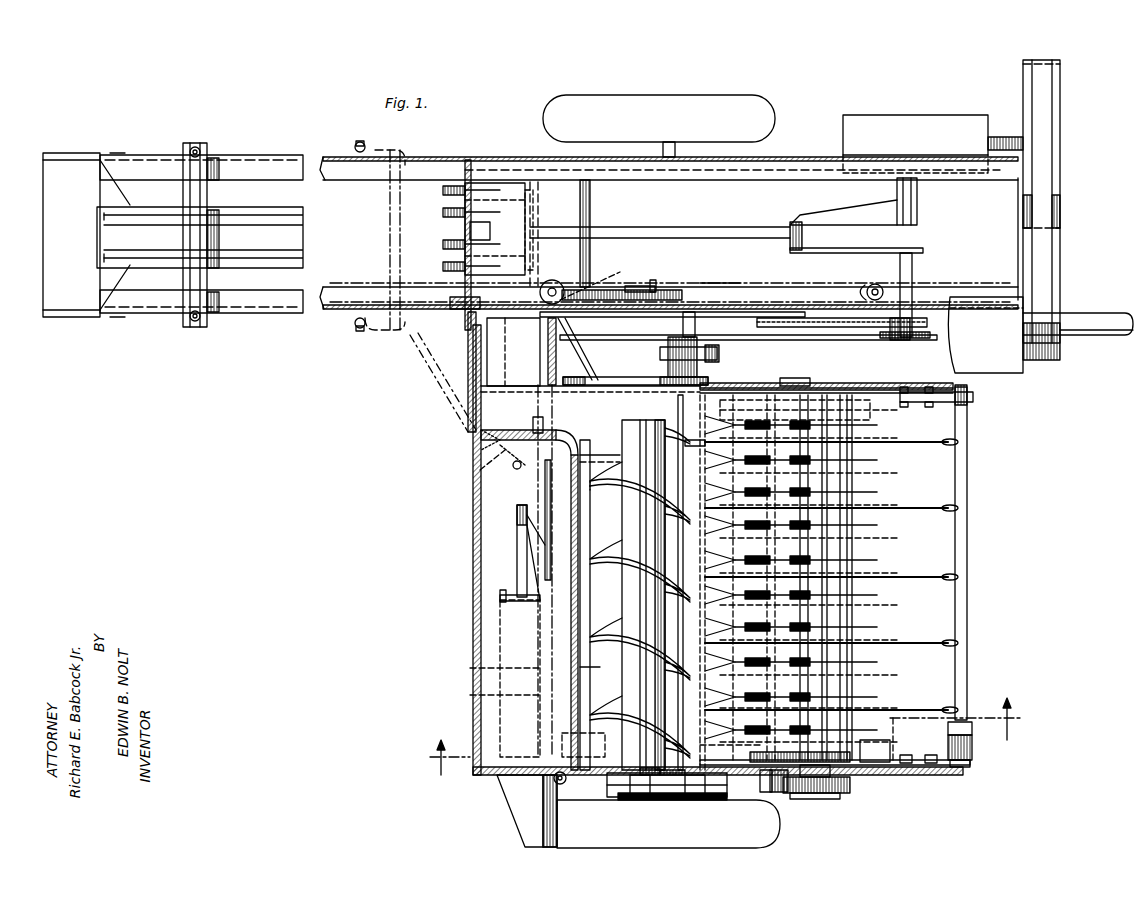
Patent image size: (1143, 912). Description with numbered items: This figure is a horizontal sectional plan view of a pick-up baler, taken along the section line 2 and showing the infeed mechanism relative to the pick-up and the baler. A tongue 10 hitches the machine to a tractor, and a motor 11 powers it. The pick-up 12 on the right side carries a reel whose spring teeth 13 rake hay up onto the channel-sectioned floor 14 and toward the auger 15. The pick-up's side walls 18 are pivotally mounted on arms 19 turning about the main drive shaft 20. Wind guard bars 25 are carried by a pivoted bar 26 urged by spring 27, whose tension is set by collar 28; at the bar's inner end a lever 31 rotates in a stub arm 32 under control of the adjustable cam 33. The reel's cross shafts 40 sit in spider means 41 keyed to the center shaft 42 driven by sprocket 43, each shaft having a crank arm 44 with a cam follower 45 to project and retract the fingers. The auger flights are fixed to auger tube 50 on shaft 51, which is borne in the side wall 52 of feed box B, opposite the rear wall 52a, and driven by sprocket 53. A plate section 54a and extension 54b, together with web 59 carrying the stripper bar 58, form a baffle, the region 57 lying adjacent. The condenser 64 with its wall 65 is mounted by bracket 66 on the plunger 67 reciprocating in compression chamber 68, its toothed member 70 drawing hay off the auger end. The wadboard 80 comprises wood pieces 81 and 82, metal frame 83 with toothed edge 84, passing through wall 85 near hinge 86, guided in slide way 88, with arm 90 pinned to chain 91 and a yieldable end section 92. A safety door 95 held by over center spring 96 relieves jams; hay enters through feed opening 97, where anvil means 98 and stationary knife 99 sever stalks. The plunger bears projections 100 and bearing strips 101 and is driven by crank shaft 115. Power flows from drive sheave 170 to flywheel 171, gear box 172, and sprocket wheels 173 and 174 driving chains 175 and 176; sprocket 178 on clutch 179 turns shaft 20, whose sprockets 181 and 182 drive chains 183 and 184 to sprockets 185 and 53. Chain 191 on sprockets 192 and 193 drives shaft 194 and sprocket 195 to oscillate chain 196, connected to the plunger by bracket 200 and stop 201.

The tongue 10 is at (1098, 315).
The motor 11 is at (990, 312).
The pick-up 12 is at (850, 543).
The spring teeth 13 is at (880, 492).
The floor 14 is at (830, 610).
The auger 15 is at (640, 418).
The side walls 18 is at (880, 392).
The arms 19 is at (770, 390).
The shaft 20 is at (676, 410).
The wind guard bars 25 is at (925, 444).
The bar 26 is at (967, 657).
The spring 27 is at (972, 748).
The collar 28 is at (948, 728).
The lever 31 is at (968, 400).
The stub arm 32 is at (973, 396).
The adjustable cam 33 is at (950, 393).
The cross shafts 40 is at (715, 440).
The spider means 41 is at (800, 405).
The center shaft 42 is at (790, 380).
The sprocket 43 is at (768, 795).
The crank arm 44 is at (895, 765).
The cam follower 45 is at (750, 758).
The auger tube 50 is at (628, 538).
The shaft 51 is at (586, 779).
The side wall 52 is at (600, 778).
The rear wall 52a is at (473, 722).
The sprocket 53 is at (635, 800).
The plate section 54a is at (600, 449).
The extension 54b is at (600, 670).
The curved wall 57 is at (568, 435).
The stripper bar 58 is at (586, 607).
The web 59 is at (585, 585).
The condenser 64 is at (548, 367).
The wall 65 is at (625, 380).
The bracket 66 is at (580, 350).
The plunger 67 is at (468, 233).
The compression chamber 68 is at (365, 200).
The toothed member 70 is at (535, 387).
The wadboard 80 is at (514, 558).
The wood piece 81 is at (572, 650).
The wood piece 82 is at (517, 508).
The metal frame piece 83 is at (510, 633).
The toothed edge 84 is at (500, 597).
The wall 85 is at (510, 430).
The hinge 86 is at (470, 440).
The slide way 88 is at (540, 465).
The arm 90 is at (490, 695).
The sprocket chain 91 is at (490, 662).
The yieldable free end section 92 is at (545, 493).
The safety door 95 is at (455, 362).
The over center spring 96 is at (480, 452).
The feed opening 97 is at (520, 330).
The anvil means 98 is at (455, 298).
The stationary knife 99 is at (480, 325).
The projections 100 is at (443, 190).
The bearing strips 101 is at (712, 188).
The crank shaft 115 is at (917, 197).
The drive sheave 170 is at (1060, 352).
The flywheel 171 is at (1060, 122).
The gear box 172 is at (965, 125).
The sprocket wheel 173 is at (905, 320).
The sprocket wheel 174 is at (930, 334).
The drive chain 175 is at (770, 318).
The chain 176 is at (815, 340).
The sprocket wheel 178 is at (665, 345).
The clutch 179 is at (718, 355).
The sprocket wheel 181 is at (700, 800).
The sprocket wheel 182 is at (655, 778).
The chain 183 is at (815, 793).
The chain 184 is at (680, 778).
The sprocket 185 is at (810, 800).
The sprocket chain 191 is at (718, 283).
The sprocket 192 is at (868, 288).
The sprocket 193 is at (622, 293).
The drive shaft 194 is at (595, 276).
The sprocket 195 is at (552, 280).
The chain 196 is at (575, 330).
The bracket 200 is at (653, 280).
The stop 201 is at (637, 279).
The feed box B is at (470, 530).
The section line 2 is at (720, 738).